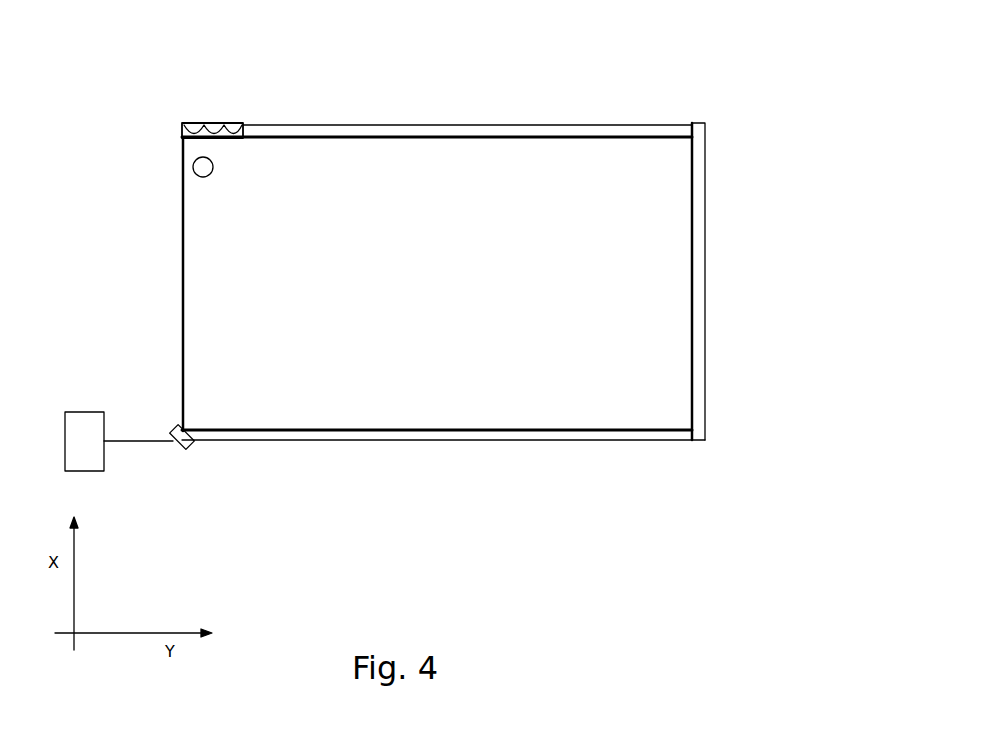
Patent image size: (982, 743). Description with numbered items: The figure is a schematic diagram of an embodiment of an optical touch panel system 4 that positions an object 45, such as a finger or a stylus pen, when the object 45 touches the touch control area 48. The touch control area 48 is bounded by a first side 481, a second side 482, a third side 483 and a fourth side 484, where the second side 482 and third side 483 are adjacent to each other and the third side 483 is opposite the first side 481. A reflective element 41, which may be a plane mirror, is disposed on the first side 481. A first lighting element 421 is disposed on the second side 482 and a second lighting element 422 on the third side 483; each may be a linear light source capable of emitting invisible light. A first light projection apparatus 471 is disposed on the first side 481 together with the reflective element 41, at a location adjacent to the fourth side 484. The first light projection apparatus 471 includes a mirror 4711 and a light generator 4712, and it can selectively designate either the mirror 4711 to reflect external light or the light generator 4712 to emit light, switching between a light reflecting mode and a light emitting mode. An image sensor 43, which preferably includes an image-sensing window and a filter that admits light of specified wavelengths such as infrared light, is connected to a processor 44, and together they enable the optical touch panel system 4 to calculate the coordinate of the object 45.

The optical touch panel system 4 is at (715, 70).
The reflective element 41 is at (458, 130).
The first lighting element 421 is at (697, 345).
The second lighting element 422 is at (575, 432).
The image sensor 43 is at (172, 448).
The processor 44 is at (88, 411).
The object 45 is at (192, 173).
The first light projection apparatus 471 is at (145, 107).
The mirror 4711 is at (187, 142).
The light generator 4712 is at (211, 128).
The touch control area 48 is at (432, 297).
The first side 481 is at (350, 137).
The second side 482 is at (694, 235).
The third side 483 is at (330, 432).
The fourth side 484 is at (183, 270).